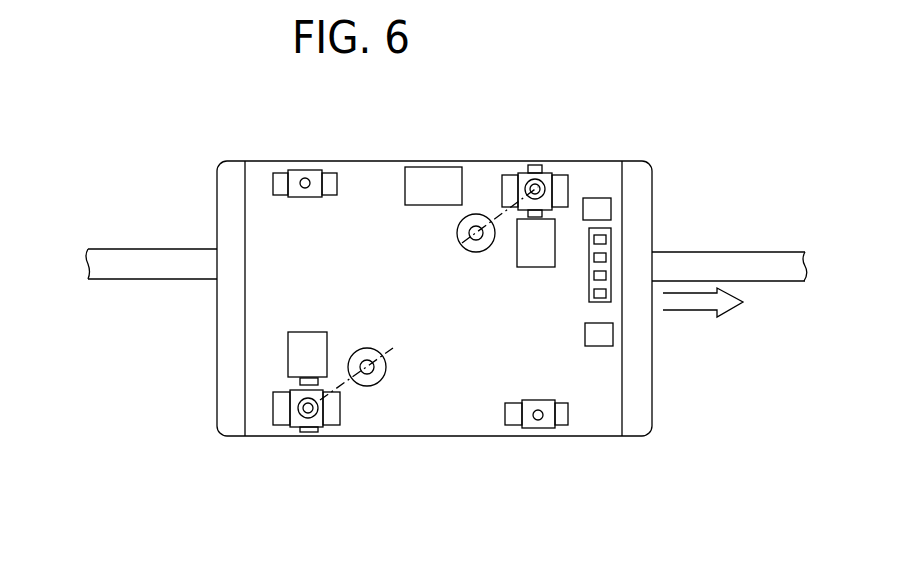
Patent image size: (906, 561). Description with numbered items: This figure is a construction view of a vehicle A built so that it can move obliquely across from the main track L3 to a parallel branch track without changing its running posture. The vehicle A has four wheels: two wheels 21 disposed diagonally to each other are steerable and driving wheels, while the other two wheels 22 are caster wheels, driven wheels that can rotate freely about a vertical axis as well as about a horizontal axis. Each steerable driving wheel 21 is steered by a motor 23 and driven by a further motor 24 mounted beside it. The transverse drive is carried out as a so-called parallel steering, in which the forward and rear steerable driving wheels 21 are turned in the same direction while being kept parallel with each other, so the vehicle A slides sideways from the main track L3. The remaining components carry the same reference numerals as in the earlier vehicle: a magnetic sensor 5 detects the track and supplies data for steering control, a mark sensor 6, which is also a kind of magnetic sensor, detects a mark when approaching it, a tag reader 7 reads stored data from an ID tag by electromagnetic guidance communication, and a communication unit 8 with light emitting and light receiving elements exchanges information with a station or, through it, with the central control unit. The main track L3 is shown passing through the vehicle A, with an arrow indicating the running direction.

The vehicle A is at (253, 160).
The main track L3 is at (757, 252).
The magnetic sensor 5 is at (613, 295).
The mark sensor 6 is at (613, 338).
The tag reader 7 is at (613, 209).
The communication unit 8 is at (450, 165).
The steerable driving wheels 21 is at (567, 172).
The caster wheels 22 is at (335, 168).
The steering motor 23 is at (458, 238).
The driving motor 24 is at (540, 267).